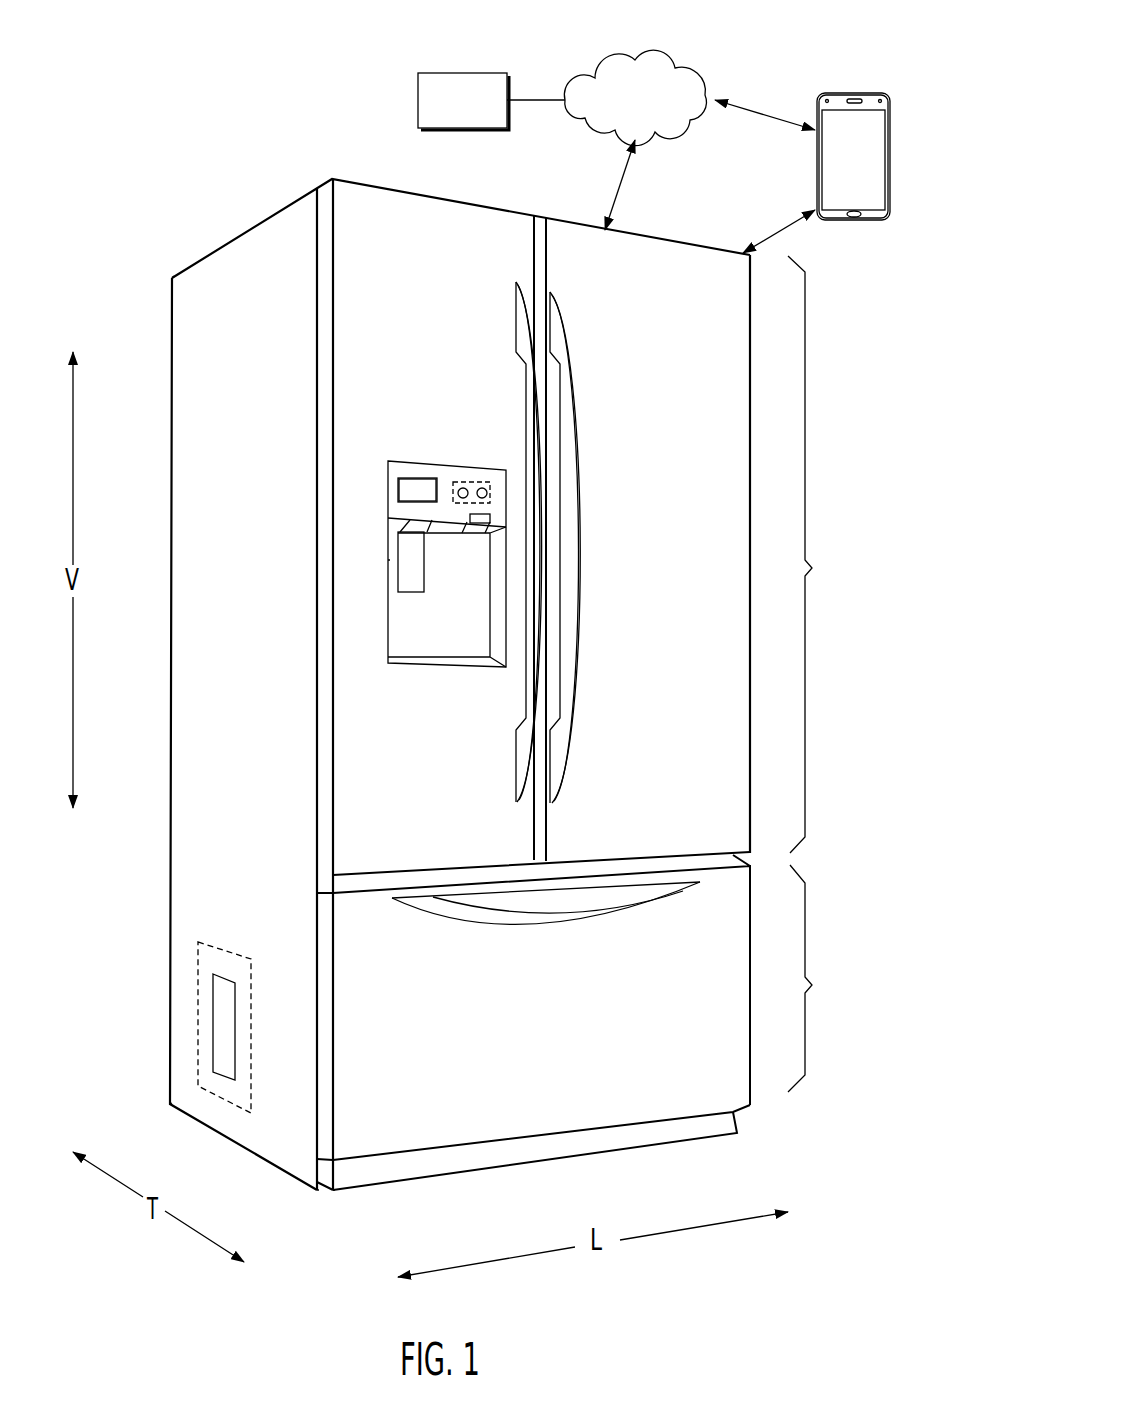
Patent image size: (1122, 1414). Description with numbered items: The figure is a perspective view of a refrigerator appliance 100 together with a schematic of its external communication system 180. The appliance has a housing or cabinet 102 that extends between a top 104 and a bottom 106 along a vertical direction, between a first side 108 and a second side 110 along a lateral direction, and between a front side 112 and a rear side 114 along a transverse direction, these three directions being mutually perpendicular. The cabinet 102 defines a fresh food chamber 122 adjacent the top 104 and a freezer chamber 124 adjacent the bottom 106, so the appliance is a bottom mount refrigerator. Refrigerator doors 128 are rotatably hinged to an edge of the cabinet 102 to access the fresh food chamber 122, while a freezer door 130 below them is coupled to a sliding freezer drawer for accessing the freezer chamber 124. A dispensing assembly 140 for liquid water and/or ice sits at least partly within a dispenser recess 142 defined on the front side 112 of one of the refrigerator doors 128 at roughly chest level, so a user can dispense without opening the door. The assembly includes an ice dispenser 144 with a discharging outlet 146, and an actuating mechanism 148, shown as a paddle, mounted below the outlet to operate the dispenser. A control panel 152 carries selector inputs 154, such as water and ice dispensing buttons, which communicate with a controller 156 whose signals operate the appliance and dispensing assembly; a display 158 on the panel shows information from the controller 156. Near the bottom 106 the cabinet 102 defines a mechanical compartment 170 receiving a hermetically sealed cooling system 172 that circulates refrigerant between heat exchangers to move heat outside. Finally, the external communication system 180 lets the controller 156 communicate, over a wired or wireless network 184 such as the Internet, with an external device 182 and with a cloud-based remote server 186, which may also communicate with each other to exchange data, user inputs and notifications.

The refrigerator appliance 100 is at (453, 688).
The cabinet 102 is at (258, 257).
The top 104 is at (168, 277).
The bottom 106 is at (158, 1099).
The first side 108 is at (330, 1207).
The second side 110 is at (737, 1137).
The front side 112 is at (314, 1197).
The rear side 114 is at (170, 1110).
The fresh food chamber 122 is at (820, 554).
The freezer chamber 124 is at (820, 978).
The refrigerator doors 128 is at (455, 317).
The freezer door 130 is at (585, 1017).
The dispensing assembly 140 is at (486, 553).
The dispenser recess 142 is at (448, 655).
The ice dispenser 144 is at (392, 587).
The discharging outlet 146 is at (405, 532).
The actuating mechanism 148 is at (413, 585).
The control panel 152 is at (486, 478).
The selector inputs 154 is at (463, 490).
The controller 156 is at (493, 493).
The display 158 is at (417, 492).
The mechanical compartment 170 is at (196, 957).
The sealed cooling system 172 is at (211, 1005).
The external communication system 180 is at (680, 126).
The external device 182 is at (890, 195).
The network 184 is at (660, 107).
The remote server 186 is at (481, 115).